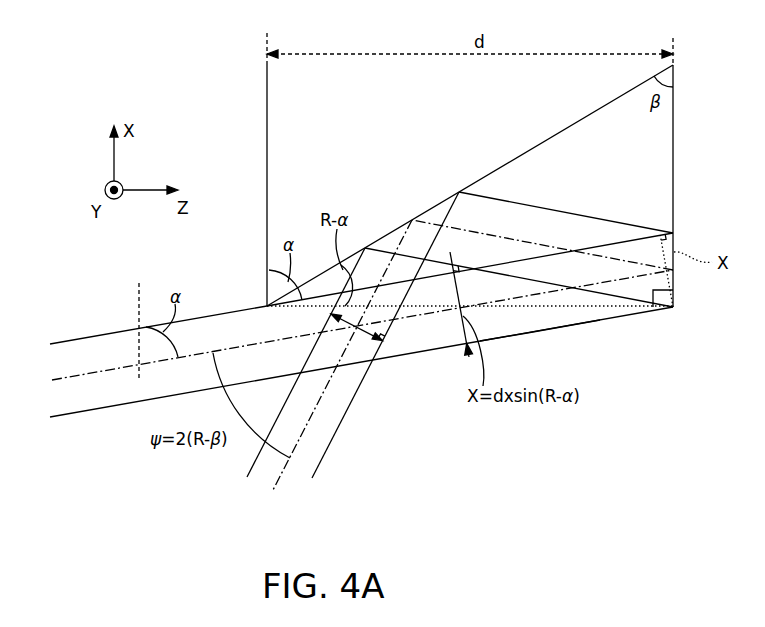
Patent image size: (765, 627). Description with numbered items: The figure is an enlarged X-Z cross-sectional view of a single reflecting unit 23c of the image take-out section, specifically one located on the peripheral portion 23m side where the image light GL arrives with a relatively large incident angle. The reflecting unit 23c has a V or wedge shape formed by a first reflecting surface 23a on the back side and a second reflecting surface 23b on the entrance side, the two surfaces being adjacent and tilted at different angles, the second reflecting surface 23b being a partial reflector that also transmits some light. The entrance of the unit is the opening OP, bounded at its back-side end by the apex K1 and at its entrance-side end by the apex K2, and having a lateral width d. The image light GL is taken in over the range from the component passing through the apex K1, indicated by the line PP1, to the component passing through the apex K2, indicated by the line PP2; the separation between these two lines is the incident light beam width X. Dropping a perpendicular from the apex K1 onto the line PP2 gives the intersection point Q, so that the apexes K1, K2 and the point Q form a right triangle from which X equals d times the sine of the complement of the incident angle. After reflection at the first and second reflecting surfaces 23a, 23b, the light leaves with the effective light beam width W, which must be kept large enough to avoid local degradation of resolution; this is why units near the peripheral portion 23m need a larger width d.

The first reflecting surface 23a is at (672, 140).
The second reflecting surface 23b is at (560, 134).
The reflecting unit 23c is at (456, 175).
The peripheral portion 23m is at (503, 430).
The image light GL is at (84, 415).
The opening OP is at (592, 321).
The line indicating the component passing through apex K1 PP1 is at (560, 328).
The line indicating the component passing through apex K2 PP2 is at (617, 243).
The intersection point Q is at (671, 229).
The apex K1 is at (674, 308).
The apex K2 is at (264, 303).
The effective light beam width W is at (384, 343).